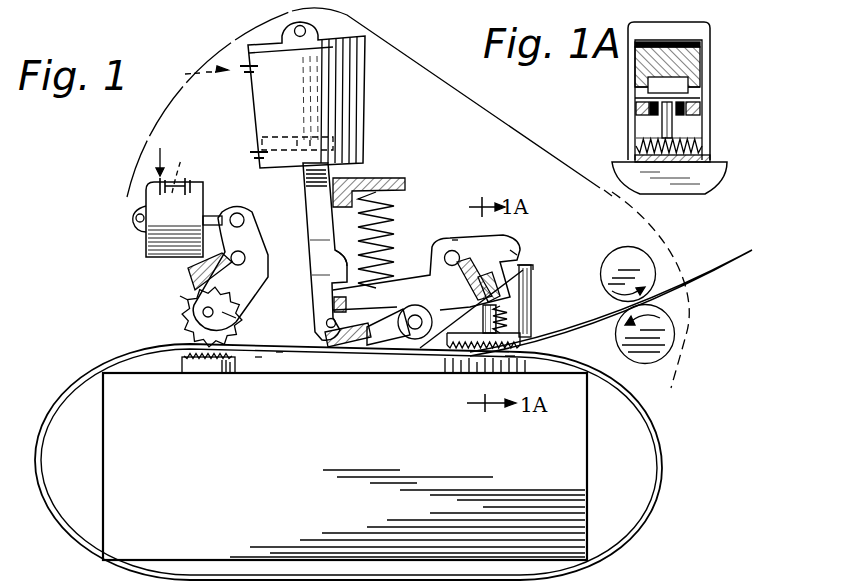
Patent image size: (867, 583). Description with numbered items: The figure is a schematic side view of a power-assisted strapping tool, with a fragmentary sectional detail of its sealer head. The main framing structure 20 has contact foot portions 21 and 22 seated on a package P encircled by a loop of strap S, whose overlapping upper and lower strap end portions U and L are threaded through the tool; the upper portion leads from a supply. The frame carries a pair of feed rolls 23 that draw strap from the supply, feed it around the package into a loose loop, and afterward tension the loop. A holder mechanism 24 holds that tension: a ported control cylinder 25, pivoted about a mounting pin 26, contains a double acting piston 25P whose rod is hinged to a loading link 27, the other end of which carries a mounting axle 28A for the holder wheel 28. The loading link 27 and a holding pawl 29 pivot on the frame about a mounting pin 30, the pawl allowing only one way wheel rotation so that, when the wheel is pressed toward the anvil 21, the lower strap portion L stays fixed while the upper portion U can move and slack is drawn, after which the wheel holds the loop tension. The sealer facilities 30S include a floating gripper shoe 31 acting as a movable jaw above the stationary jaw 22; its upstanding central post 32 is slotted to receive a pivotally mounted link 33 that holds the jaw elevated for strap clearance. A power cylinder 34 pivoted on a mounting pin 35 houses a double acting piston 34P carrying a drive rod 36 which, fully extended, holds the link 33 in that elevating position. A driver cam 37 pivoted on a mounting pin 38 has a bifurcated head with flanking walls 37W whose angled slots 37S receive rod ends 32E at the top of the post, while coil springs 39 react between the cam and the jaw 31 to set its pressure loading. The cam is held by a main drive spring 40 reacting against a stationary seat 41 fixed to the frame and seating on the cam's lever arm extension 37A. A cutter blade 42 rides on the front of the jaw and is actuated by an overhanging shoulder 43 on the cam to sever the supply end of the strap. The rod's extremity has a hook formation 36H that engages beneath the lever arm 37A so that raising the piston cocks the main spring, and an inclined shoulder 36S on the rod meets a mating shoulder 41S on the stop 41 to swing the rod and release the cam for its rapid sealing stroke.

In FIG. 1, the main framing structure 20 is at (452, 81).
In FIG. 1, the contact foot portion (anvil) 21 is at (205, 362).
In FIG. 1, the contact foot portion (stationary jaw) 22 is at (458, 363).
In FIG. 1A, the contact foot portion (stationary jaw) 22 is at (712, 176).
In FIG. 1, the feed rolls 23 is at (620, 258).
In FIG. 1, the holder mechanism 24 is at (178, 298).
In FIG. 1, the ported control cylinder 25 is at (156, 209).
In FIG. 1, the double acting piston 25P is at (183, 166).
In FIG. 1, the mounting pin 26 is at (135, 221).
In FIG. 1, the loading link 27 is at (242, 293).
In FIG. 1, the holder wheel 28 is at (206, 317).
In FIG. 1, the mounting axle 28A is at (228, 318).
In FIG. 1, the holding pawl 29 is at (228, 269).
In FIG. 1, the mounting pin 30 is at (246, 256).
In FIG. 1, the sealer facilities 30S is at (455, 236).
In FIG. 1, the floating gripper shoe (movable jaw) 31 is at (507, 360).
In FIG. 1A, the floating gripper shoe (movable jaw) 31 is at (690, 144).
In FIG. 1, the upstanding central post 32 is at (472, 307).
In FIG. 1A, the upstanding central post 32 is at (699, 107).
In FIG. 1, the rod ends 32E is at (523, 267).
In FIG. 1A, the rod ends 32E is at (700, 105).
In FIG. 1, the pivotally mounted link 33 is at (368, 345).
In FIG. 1A, the pivotally mounted link 33 is at (650, 112).
In FIG. 1, the power cylinder 34 is at (319, 84).
In FIG. 1, the double acting piston 34P is at (277, 140).
In FIG. 1, the mounting pin 35 is at (306, 30).
In FIG. 1, the drive rod (piston rod) 36 is at (314, 281).
In FIG. 1, the hook formation 36H is at (329, 330).
In FIG. 1, the inclined shoulder 36S is at (337, 253).
In FIG. 1, the driver cam 37 is at (441, 286).
In FIG. 1A, the driver cam 37 is at (671, 80).
In FIG. 1, the lever arm extension 37A is at (338, 300).
In FIG. 1, the angled slots 37S is at (474, 280).
In FIG. 1A, the flanking walls 37W is at (749, 107).
In FIG. 1, the mounting pin 38 is at (447, 252).
In FIG. 1, the coil springs 39 is at (508, 320).
In FIG. 1, the main drive spring 40 is at (392, 209).
In FIG. 1, the stationary seat (stop) 41 is at (379, 184).
In FIG. 1, the mating shoulder 41S is at (330, 190).
In FIG. 1, the cutter blade 42 is at (542, 299).
In FIG. 1, the overhanging shoulder 43 is at (515, 258).
In FIG. 1, the lower strap end portion L is at (259, 357).
In FIG. 1, the package P is at (352, 452).
In FIG. 1, the strap S is at (665, 464).
In FIG. 1A, the strap S is at (710, 159).
In FIG. 1, the upper strap end portion U is at (279, 352).